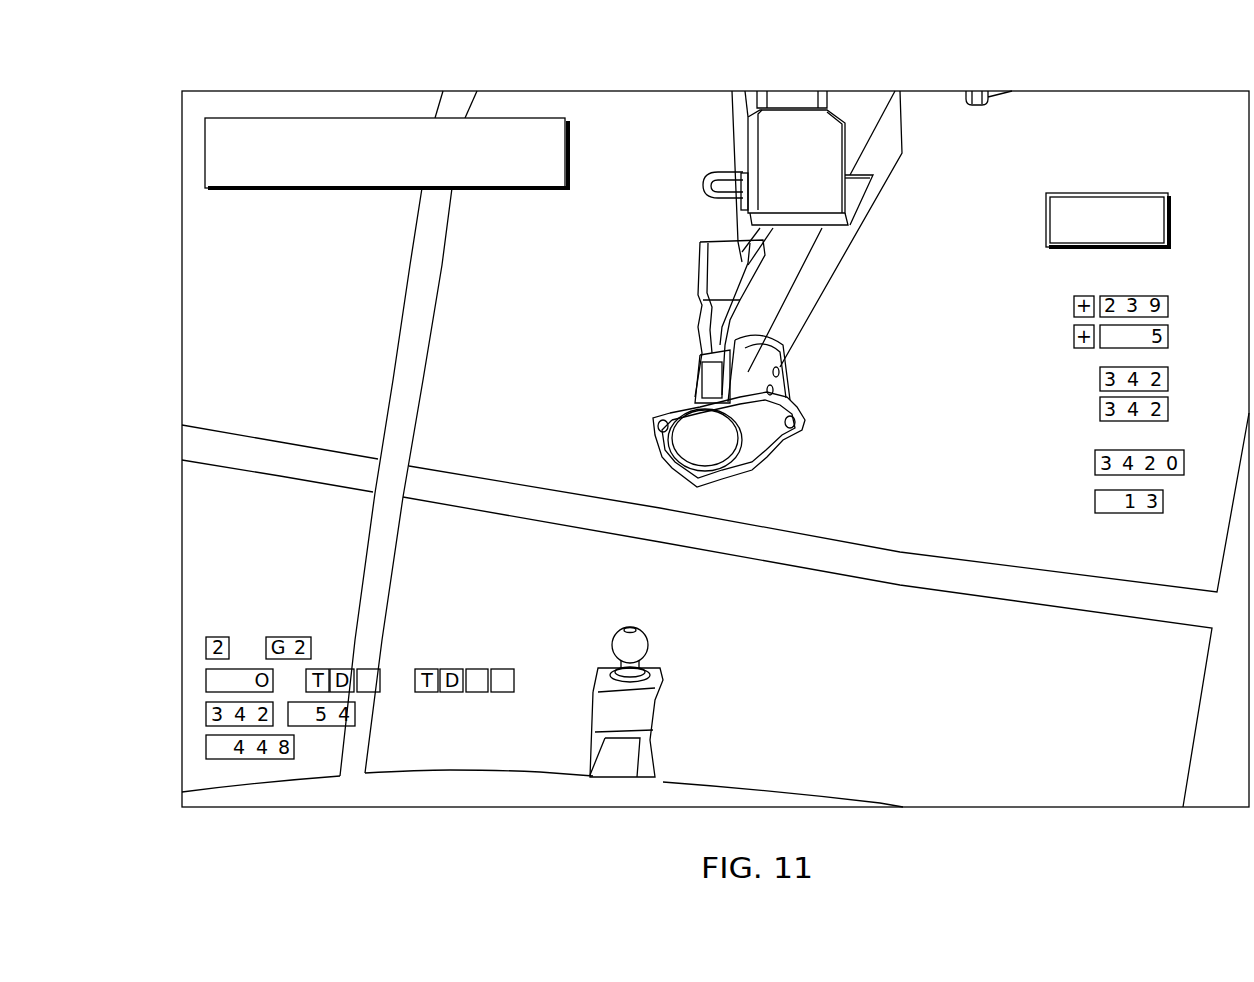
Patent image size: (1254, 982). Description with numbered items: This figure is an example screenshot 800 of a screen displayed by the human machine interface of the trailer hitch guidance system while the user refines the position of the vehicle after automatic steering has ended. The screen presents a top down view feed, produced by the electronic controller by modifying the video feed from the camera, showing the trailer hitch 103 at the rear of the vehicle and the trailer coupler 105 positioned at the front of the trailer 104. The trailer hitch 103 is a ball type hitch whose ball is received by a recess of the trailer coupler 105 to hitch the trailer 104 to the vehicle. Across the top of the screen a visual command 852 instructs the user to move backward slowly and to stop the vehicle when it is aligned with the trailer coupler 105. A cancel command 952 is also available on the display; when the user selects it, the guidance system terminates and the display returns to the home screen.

The screenshot 800 is at (160, 80).
The visual command 852 is at (205, 152).
The cancel command 952 is at (1046, 218).
The trailer 104 is at (886, 181).
The trailer coupler 105 is at (697, 395).
The trailer hitch 103 is at (620, 640).